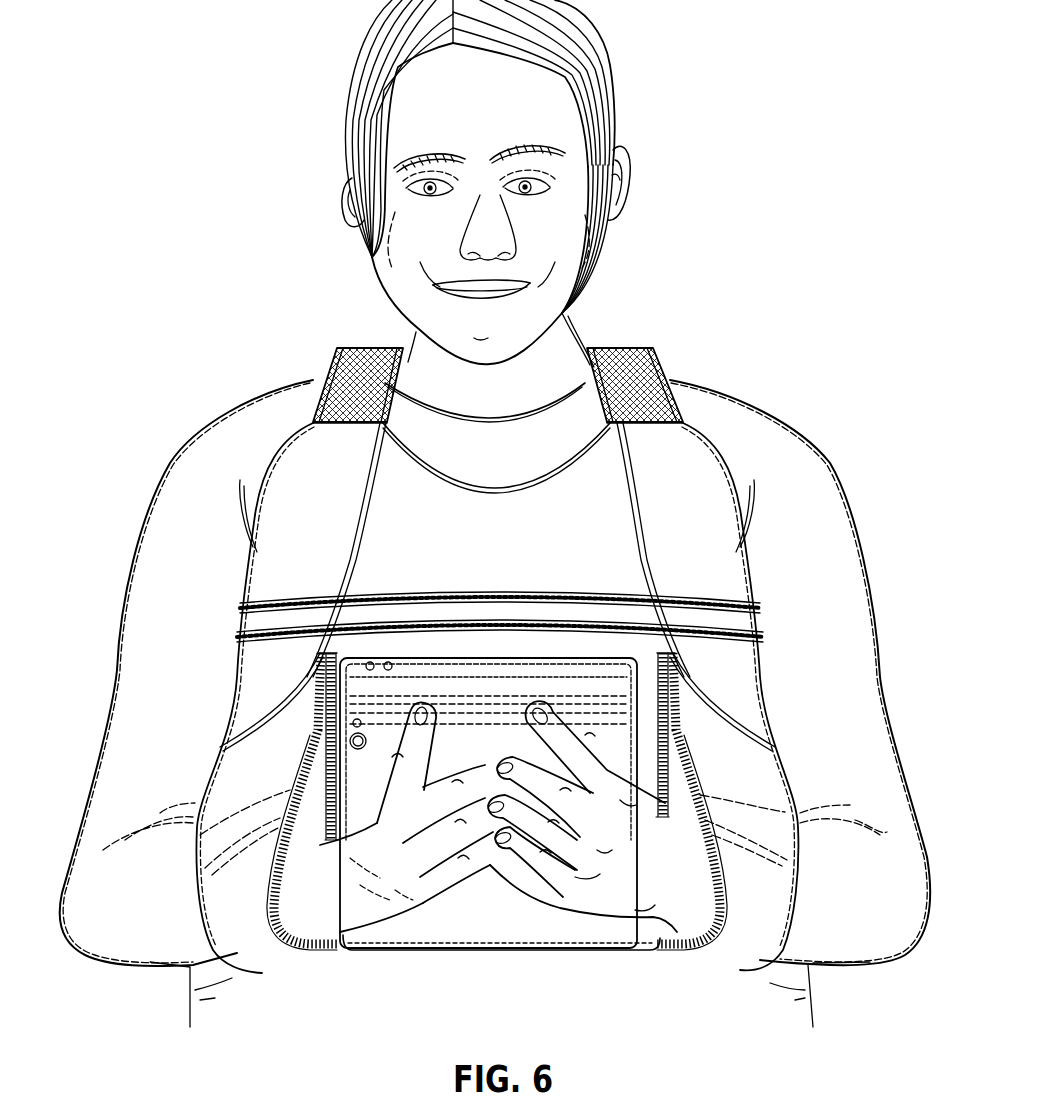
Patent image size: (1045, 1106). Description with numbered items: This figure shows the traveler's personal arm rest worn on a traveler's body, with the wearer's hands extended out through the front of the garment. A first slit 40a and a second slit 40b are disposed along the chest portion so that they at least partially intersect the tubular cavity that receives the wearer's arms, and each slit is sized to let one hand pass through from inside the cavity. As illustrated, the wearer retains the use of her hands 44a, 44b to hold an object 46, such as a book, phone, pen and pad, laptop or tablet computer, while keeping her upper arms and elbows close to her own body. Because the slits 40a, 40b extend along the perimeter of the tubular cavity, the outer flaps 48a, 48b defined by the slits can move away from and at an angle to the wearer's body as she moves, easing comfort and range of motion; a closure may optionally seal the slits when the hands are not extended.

The first slit 40a is at (313, 810).
The second slit 40b is at (683, 803).
The hand 44a is at (363, 918).
The hand 44b is at (650, 894).
The object 46 is at (577, 687).
The outer flap 48a is at (257, 947).
The outer flap 48b is at (741, 943).